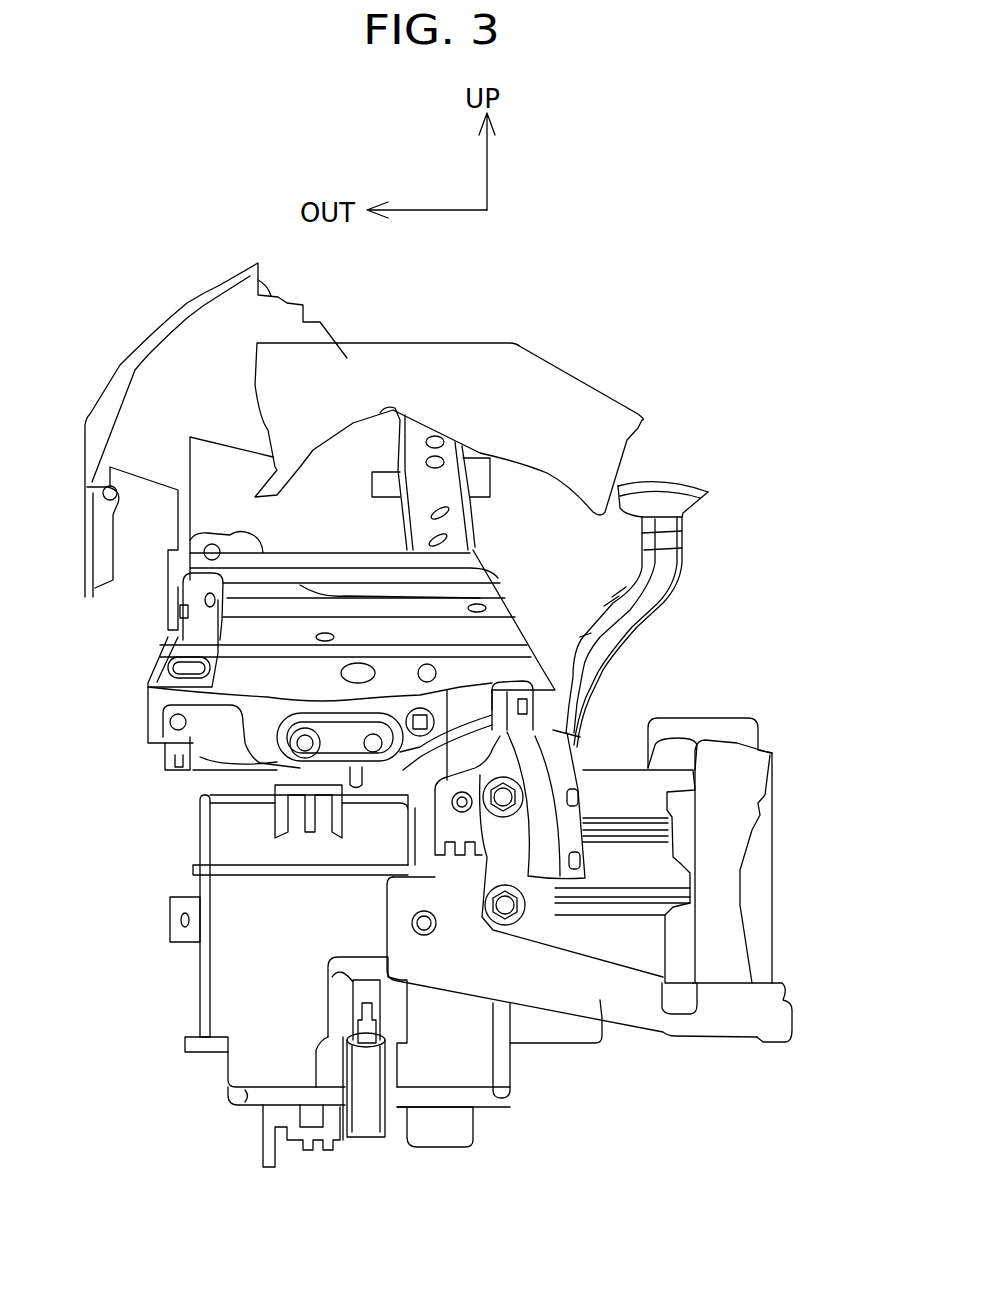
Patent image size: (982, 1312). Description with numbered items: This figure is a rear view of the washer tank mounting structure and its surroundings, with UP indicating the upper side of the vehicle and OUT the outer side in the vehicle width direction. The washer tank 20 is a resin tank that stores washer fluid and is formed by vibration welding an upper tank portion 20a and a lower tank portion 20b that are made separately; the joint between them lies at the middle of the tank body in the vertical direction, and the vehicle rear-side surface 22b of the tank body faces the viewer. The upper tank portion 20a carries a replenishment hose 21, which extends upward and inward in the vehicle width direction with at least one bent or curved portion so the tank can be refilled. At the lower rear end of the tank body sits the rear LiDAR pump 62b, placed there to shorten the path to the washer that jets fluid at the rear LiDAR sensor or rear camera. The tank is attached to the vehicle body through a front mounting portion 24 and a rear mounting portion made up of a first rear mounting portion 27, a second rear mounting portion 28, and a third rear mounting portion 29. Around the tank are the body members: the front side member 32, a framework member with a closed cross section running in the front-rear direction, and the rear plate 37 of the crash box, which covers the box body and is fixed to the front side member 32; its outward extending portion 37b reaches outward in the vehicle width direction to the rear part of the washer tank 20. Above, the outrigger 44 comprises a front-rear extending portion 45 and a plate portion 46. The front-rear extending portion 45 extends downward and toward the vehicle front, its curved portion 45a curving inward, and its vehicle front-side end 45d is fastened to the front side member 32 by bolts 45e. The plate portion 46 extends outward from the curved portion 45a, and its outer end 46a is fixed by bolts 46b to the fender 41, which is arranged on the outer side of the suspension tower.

The fender 41 is at (187, 353).
The front-rear extending portion 45 is at (415, 456).
The curved portion 45a is at (430, 550).
The vehicle front-side end 45d is at (587, 925).
The bolts 45e is at (582, 862).
The outrigger 44 is at (510, 608).
The plate portion 46 is at (298, 590).
The outer end 46a is at (167, 662).
The bolts 46b is at (205, 545).
The replenishment hose 21 is at (668, 578).
The second rear mounting portion 28 is at (303, 744).
The washer tank 20 is at (182, 975).
The upper tank portion 20a is at (200, 835).
The lower tank portion 20b is at (202, 1020).
The vehicle rear-side surface 22b is at (238, 1075).
The rear LiDAR pump 62b is at (370, 1113).
The rear plate 37 is at (553, 996).
The outward extending portion 37b is at (500, 985).
The front mounting portion 24 is at (580, 1025).
The first rear mounting portion 27 is at (462, 813).
The third rear mounting portion 29 is at (433, 931).
The front side member 32 is at (731, 964).